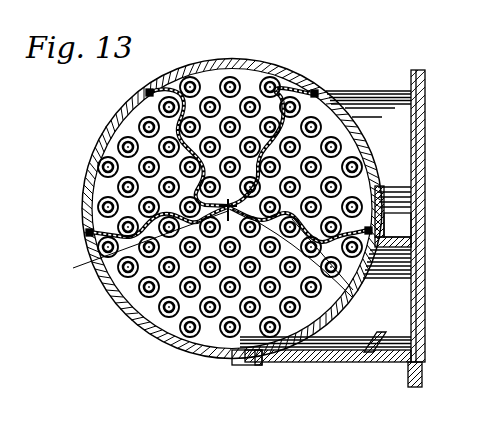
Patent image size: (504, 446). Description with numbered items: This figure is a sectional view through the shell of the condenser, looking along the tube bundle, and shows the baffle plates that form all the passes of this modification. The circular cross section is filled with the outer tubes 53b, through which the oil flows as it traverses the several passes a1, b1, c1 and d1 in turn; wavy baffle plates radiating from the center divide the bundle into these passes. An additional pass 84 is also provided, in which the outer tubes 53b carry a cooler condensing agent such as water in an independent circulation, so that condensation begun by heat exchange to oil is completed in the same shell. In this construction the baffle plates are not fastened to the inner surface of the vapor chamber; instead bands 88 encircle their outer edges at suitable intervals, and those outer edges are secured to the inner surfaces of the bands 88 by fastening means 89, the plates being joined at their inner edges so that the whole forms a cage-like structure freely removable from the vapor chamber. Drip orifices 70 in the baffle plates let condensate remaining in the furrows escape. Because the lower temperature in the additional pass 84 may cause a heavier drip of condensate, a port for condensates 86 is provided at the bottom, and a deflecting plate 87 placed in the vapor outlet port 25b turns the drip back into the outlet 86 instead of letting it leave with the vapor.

The additional pass 84 is at (310, 318).
The outer tubes 53b is at (283, 335).
The bands 88 is at (365, 137).
The vapor outlet port 25b is at (412, 316).
The deflecting plate 87 is at (378, 352).
The port for condensates 86 is at (242, 362).
The fastening means 89 is at (317, 86).
The drip orifices 70 is at (212, 261).
The pass b' b1 is at (262, 48).
The pass c' c1 is at (87, 123).
The pass a' a1 is at (360, 82).
The pass d' d1 is at (95, 297).